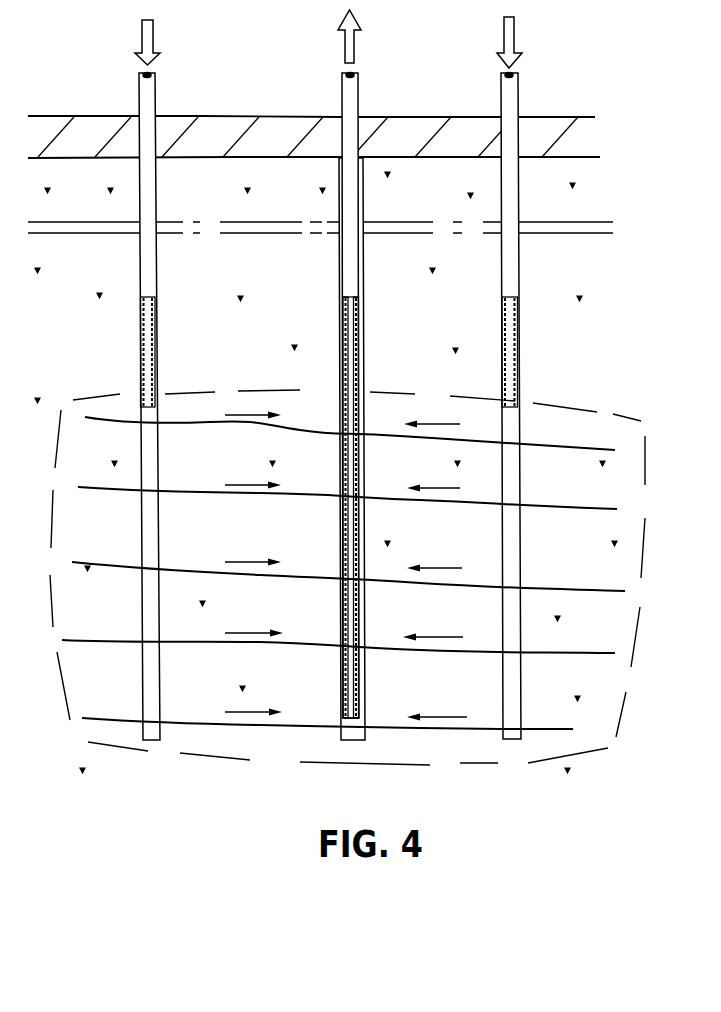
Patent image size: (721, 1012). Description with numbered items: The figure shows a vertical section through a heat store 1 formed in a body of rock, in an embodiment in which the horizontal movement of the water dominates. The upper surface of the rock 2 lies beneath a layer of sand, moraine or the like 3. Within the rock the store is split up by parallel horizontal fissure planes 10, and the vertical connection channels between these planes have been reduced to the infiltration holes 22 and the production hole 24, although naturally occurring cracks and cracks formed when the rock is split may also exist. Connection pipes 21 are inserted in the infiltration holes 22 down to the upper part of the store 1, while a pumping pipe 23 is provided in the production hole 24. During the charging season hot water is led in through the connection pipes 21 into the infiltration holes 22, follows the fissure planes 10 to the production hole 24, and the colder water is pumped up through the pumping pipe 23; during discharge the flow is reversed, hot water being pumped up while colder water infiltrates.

The heat store 1 is at (687, 498).
The upper surface of the body of rock 2 is at (648, 115).
The layer of sand, moraine or the like 3 is at (275, 137).
The horizontal fissure planes 10 is at (327, 390).
The connection pipes 21 is at (167, 76).
The infiltration holes 22 is at (152, 478).
The pumping pipe 23 is at (368, 79).
The production hole 24 is at (364, 487).